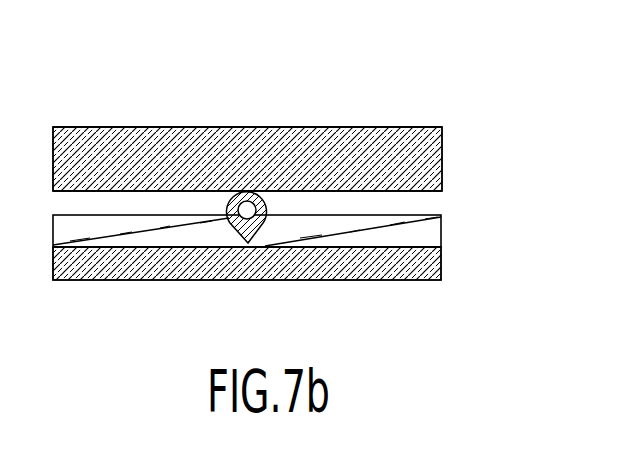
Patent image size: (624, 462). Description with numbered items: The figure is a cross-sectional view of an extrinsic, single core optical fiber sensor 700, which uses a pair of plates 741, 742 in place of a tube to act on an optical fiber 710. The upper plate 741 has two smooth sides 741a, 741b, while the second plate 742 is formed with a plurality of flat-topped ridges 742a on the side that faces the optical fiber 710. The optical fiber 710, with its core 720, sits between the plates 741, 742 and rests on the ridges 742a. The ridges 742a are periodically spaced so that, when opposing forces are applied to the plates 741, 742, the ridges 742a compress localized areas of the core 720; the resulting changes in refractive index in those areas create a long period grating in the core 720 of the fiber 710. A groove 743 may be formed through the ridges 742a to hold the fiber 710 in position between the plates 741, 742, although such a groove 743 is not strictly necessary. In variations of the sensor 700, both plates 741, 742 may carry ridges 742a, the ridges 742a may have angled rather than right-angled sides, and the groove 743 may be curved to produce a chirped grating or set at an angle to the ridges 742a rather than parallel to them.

The sensor 700 is at (128, 100).
The optical fiber 710 is at (244, 211).
The core 720 is at (242, 215).
The plate 741 is at (330, 128).
The smooth side 741a is at (430, 191).
The smooth side 741b is at (425, 128).
The second plate 742 is at (441, 268).
The flat-topped ridges 742a is at (441, 230).
The groove 743 is at (251, 243).